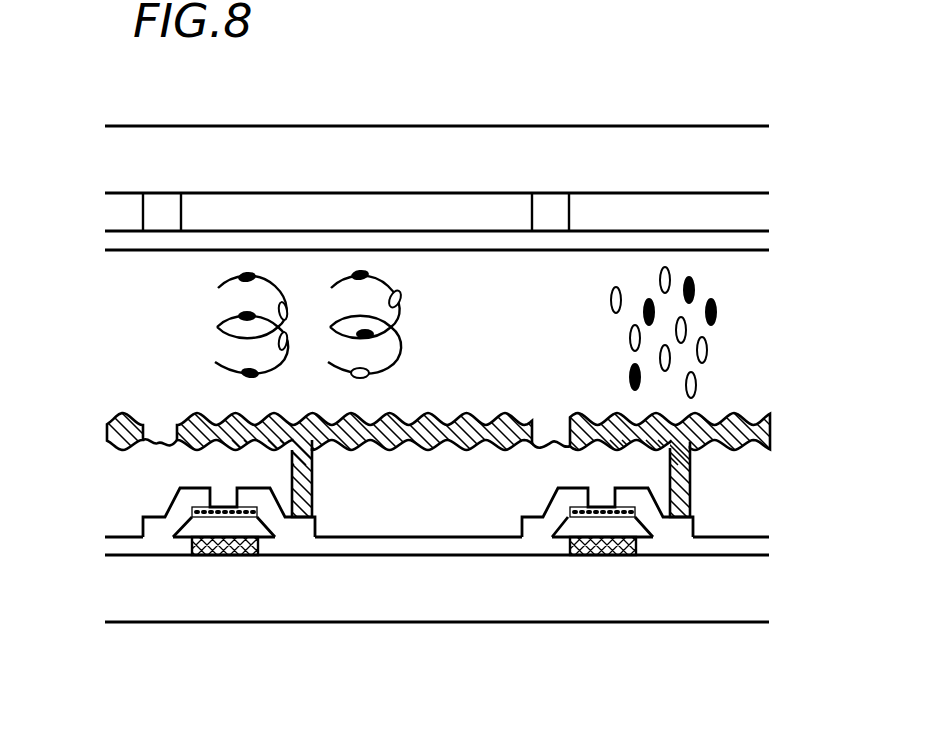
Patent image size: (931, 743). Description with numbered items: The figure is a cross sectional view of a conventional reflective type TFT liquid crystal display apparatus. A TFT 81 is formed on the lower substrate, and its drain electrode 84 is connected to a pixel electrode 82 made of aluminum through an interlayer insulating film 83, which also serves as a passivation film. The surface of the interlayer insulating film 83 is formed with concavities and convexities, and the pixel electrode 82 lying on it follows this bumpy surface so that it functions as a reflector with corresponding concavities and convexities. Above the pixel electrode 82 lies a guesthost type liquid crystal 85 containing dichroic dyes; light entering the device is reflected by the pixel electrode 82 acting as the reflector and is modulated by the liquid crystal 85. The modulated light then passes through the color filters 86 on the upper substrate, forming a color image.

The TFT 81 is at (601, 558).
The pixel electrode 82 is at (103, 437).
The interlayer insulating film 83 is at (747, 492).
The drain electrode 84 is at (677, 647).
The guesthost type liquid crystal 85 is at (207, 328).
The color filters 86 is at (309, 208).